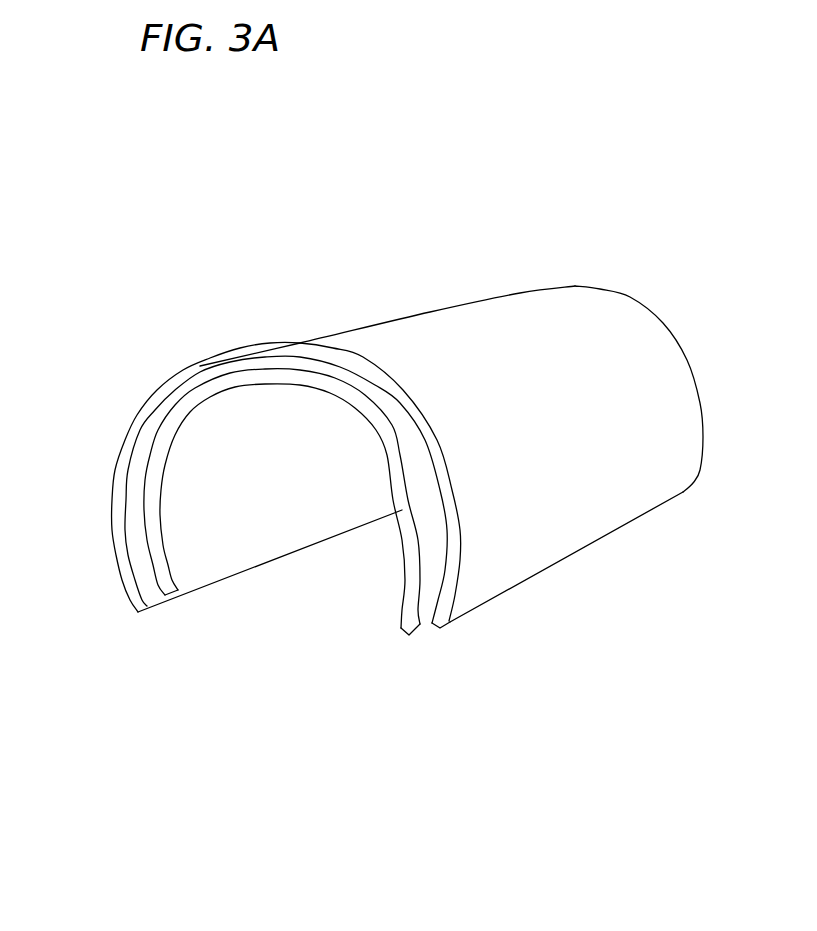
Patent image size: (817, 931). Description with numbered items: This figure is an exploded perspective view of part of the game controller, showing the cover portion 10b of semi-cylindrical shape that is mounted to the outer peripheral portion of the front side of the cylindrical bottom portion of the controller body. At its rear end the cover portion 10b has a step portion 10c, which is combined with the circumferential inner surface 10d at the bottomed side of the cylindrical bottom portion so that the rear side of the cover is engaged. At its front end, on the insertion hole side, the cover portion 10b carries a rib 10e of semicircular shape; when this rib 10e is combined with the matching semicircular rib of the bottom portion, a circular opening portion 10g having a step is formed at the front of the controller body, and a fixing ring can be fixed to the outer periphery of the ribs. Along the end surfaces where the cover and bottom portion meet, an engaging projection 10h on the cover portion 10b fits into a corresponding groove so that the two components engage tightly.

The cover portion 10b is at (418, 337).
The step portion 10c is at (640, 302).
The circumferential inner surface 10d is at (198, 370).
The rib 10e is at (402, 618).
The circular opening portion 10g is at (266, 643).
The engaging projection 10h is at (421, 628).